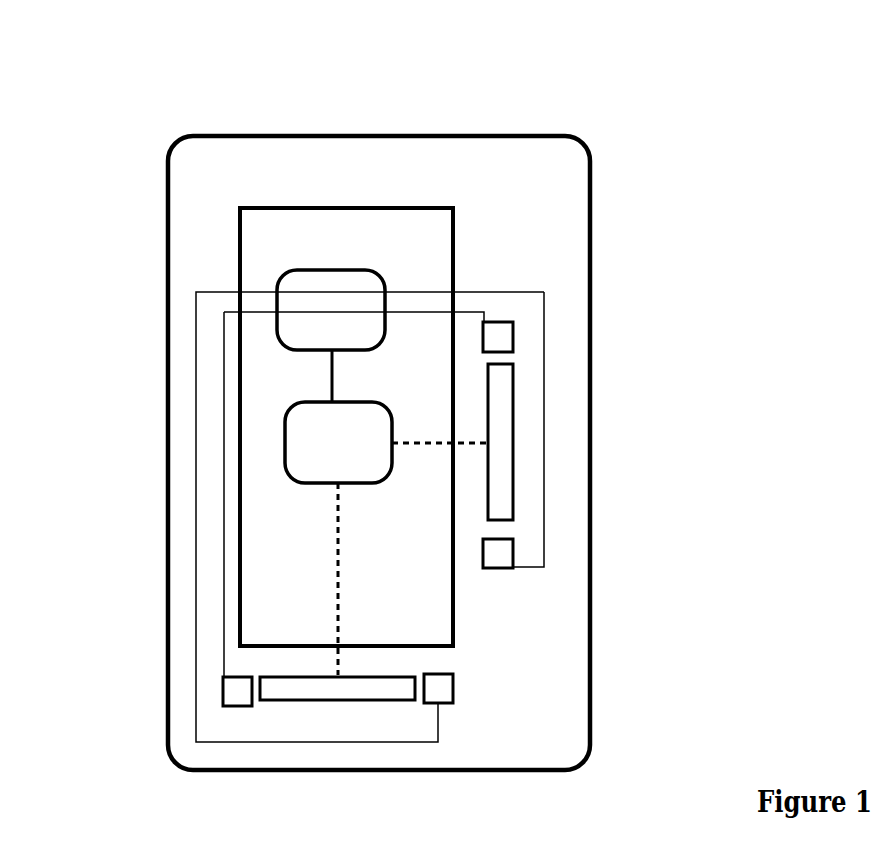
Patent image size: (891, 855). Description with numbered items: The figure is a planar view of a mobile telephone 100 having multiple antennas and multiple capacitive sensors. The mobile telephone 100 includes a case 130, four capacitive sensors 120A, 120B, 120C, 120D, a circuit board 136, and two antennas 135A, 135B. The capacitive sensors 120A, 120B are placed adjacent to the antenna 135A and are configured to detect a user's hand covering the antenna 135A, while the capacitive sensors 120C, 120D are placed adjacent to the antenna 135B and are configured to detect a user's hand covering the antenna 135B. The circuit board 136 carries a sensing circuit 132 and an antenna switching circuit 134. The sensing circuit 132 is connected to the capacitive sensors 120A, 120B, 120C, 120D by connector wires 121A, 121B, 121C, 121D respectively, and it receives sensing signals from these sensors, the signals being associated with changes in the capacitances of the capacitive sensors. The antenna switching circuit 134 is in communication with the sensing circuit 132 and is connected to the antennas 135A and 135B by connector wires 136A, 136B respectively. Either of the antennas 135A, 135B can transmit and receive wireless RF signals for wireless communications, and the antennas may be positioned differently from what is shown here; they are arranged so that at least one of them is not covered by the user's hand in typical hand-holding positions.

The mobile telephone 100 is at (192, 126).
The case 130 is at (508, 133).
The sensing circuit 132 is at (330, 310).
The antenna switching circuit 134 is at (337, 443).
The circuit board 136 is at (456, 228).
The connector wire 136A is at (455, 452).
The connector wire 136B is at (337, 578).
The antenna 135A is at (500, 425).
The antenna 135B is at (359, 690).
The capacitive sensor 120A is at (498, 337).
The capacitive sensor 120B is at (498, 553).
The capacitive sensor 120C is at (440, 688).
The capacitive sensor 120D is at (240, 687).
The connector wire 121A is at (463, 311).
The connector wire 121B is at (545, 543).
The connector wire 121C is at (267, 742).
The connector wire 121D is at (222, 647).